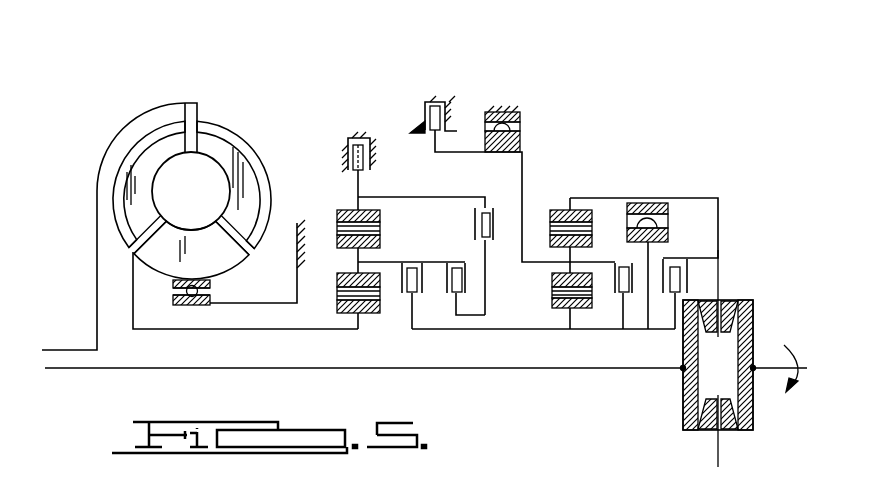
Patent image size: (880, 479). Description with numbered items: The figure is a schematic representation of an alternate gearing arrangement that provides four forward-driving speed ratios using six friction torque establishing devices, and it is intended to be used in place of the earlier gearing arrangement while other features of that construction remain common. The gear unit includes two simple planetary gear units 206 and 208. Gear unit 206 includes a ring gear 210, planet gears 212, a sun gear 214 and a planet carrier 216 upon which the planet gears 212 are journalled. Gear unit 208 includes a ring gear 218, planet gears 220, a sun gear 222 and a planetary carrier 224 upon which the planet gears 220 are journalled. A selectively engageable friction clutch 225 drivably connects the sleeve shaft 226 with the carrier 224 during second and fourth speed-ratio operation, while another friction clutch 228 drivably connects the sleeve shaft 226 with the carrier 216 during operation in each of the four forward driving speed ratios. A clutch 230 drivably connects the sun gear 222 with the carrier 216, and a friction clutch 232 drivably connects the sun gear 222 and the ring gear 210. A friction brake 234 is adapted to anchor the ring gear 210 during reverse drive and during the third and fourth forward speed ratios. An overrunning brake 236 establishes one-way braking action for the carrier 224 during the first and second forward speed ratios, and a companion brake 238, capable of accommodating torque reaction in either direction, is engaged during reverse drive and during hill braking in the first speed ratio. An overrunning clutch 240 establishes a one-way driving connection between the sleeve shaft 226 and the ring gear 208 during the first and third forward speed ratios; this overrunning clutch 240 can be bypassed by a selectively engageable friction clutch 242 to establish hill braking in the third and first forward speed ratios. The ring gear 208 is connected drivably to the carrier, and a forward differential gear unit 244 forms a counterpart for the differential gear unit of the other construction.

The simple planetary gear unit 206 is at (364, 206).
The simple planetary gear unit 208 is at (596, 218).
The ring gear 210 is at (342, 210).
The planet gears 212 is at (373, 312).
The sun gear 214 is at (335, 321).
The planet carrier 216 is at (398, 261).
The ring gear 218 is at (606, 190).
The planet gears 220 is at (575, 321).
The sun gear 222 is at (587, 306).
The planetary carrier 224 is at (533, 260).
The friction clutch 225 is at (632, 266).
The sleeve shaft 226 is at (477, 330).
The friction clutch 228 is at (414, 293).
The friction clutch 230 is at (465, 280).
The friction clutch 232 is at (486, 212).
The friction brake 234 is at (358, 137).
The overrunning brake 236 is at (512, 112).
The companion brake 238 is at (440, 100).
The overrunning clutch 240 is at (669, 209).
The friction clutch 242 is at (688, 273).
The forward differential gear unit 244 is at (687, 410).